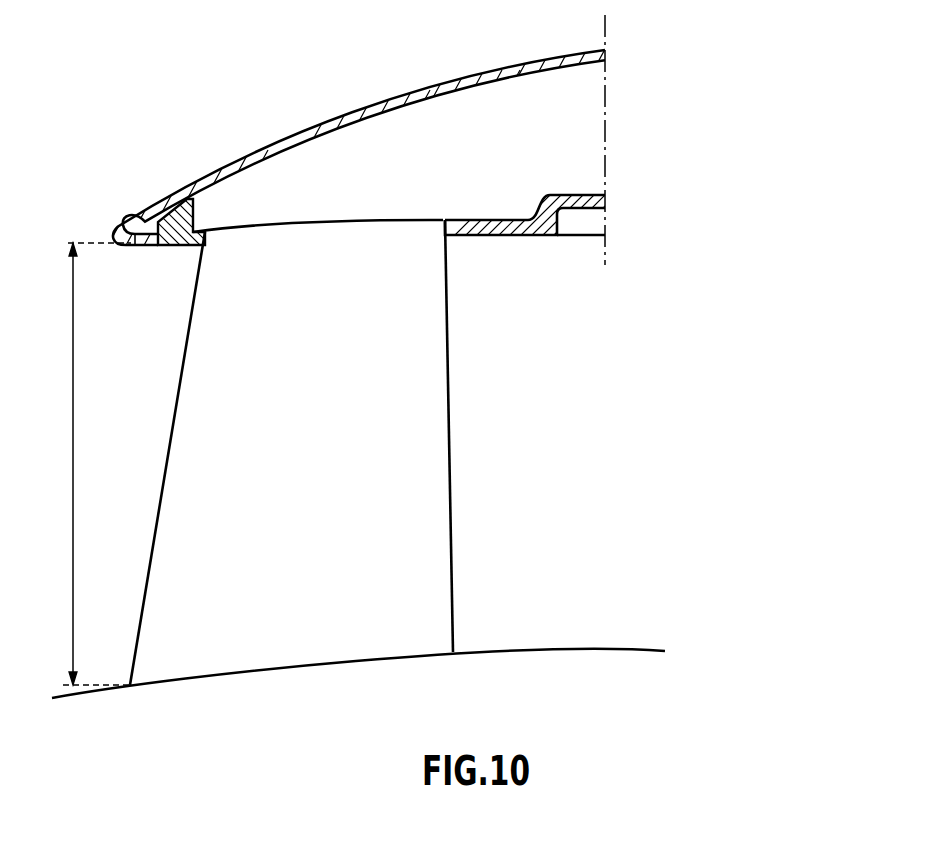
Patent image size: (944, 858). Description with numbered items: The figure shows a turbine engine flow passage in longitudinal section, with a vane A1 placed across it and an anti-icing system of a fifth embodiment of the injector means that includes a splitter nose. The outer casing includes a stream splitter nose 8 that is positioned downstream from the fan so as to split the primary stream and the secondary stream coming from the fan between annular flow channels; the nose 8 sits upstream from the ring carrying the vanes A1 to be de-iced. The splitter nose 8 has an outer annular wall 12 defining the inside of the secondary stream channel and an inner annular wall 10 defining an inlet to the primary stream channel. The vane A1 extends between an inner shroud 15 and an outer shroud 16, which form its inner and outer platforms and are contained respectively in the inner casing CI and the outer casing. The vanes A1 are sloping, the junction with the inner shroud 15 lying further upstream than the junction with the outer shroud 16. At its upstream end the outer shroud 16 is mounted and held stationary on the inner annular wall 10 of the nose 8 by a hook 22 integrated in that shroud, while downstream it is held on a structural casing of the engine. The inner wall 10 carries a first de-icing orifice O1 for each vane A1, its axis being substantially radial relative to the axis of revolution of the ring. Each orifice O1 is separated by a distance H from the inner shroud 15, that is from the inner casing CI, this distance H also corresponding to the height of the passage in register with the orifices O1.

The stream splitter nose 8 is at (100, 100).
The outer annular wall 12 is at (370, 107).
The hook 22 is at (197, 210).
The outer shroud 16 is at (478, 228).
The inner annular wall 10 is at (162, 246).
The inner shroud 15 is at (236, 670).
The inner casing CI is at (592, 651).
The first de-icing orifice O1 is at (140, 220).
The vane A1 is at (288, 470).
The distance H is at (93, 464).